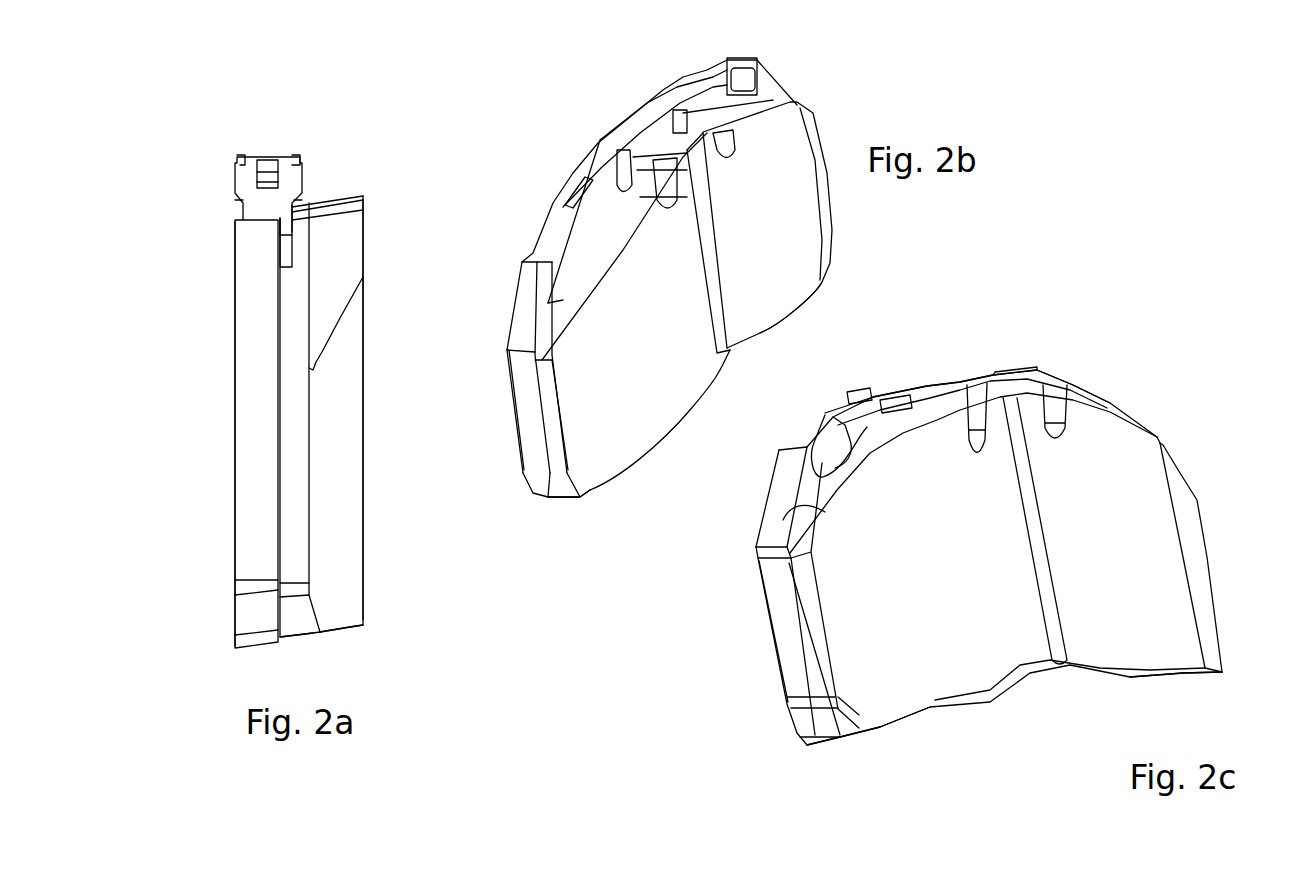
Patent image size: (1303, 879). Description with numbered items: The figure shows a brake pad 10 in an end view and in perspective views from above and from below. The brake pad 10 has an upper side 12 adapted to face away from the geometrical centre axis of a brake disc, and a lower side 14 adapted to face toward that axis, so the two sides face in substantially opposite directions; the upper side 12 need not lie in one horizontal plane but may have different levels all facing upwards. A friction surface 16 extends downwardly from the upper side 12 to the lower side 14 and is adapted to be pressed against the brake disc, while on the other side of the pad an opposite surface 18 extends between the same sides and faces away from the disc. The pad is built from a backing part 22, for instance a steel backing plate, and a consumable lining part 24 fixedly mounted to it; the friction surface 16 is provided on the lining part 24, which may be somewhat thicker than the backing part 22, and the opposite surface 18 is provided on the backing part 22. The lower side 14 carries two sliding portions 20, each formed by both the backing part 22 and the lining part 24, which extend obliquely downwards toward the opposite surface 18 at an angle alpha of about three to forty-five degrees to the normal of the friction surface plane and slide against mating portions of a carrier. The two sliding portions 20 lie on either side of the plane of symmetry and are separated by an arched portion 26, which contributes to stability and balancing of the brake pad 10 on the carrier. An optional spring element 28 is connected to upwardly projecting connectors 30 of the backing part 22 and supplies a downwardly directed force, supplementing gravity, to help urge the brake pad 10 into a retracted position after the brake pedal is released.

In FIG. 2A, the brake pad 10 is at (368, 140).
In FIG. 2B, the brake pad 10 is at (582, 122).
In FIG. 2C, the brake pad 10 is at (1143, 338).
In FIG. 2A, the upper side 12 is at (323, 197).
In FIG. 2B, the upper side 12 is at (558, 305).
In FIG. 2C, the upper side 12 is at (786, 459).
In FIG. 2A, the lower side 14 is at (323, 633).
In FIG. 2B, the lower side 14 is at (743, 340).
In FIG. 2C, the lower side 14 is at (1102, 692).
In FIG. 2A, the friction surface 16 is at (364, 433).
In FIG. 2B, the friction surface 16 is at (667, 340).
In FIG. 2C, the friction surface 16 is at (977, 600).
In FIG. 2A, the opposite surface 18 is at (235, 433).
In FIG. 2A, the sliding portion 20 is at (348, 628).
In FIG. 2B, the sliding portion 20 is at (610, 473).
In FIG. 2C, the sliding portion 20 is at (878, 730).
In FIG. 2A, the backing part 22 is at (257, 295).
In FIG. 2B, the backing part 22 is at (522, 407).
In FIG. 2C, the backing part 22 is at (781, 609).
In FIG. 2A, the consumable lining part 24 is at (343, 548).
In FIG. 2B, the consumable lining part 24 is at (578, 397).
In FIG. 2C, the consumable lining part 24 is at (817, 650).
In FIG. 2C, the arched portion 26 is at (1067, 675).
In FIG. 2A, the spring element 28 is at (243, 175).
In FIG. 2B, the spring element 28 is at (560, 220).
In FIG. 2C, the spring element 28 is at (952, 378).
In FIG. 2C, the upwardly projecting connectors 30 is at (850, 400).